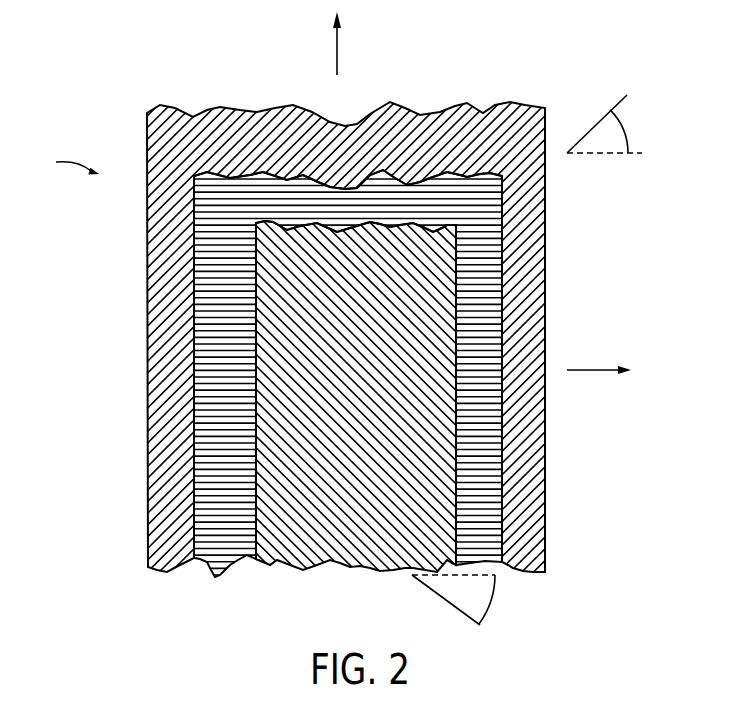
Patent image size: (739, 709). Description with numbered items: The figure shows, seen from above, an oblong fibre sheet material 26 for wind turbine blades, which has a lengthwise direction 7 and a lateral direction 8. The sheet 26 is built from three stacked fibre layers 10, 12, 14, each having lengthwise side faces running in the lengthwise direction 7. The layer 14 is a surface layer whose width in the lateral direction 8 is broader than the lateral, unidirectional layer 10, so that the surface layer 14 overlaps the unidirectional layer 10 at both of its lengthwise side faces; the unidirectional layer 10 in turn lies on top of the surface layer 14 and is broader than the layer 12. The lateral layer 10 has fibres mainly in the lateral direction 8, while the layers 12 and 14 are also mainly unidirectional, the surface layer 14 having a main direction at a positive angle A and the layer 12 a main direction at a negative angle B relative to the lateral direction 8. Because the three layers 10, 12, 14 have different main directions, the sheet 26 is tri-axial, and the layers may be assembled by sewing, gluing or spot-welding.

The lengthwise direction 7 is at (337, 48).
The lateral direction 8 is at (589, 369).
The lateral unidirectional fibre layer 10 is at (503, 273).
The fibre layer 12 is at (274, 561).
The surface layer 14 is at (153, 373).
The fibre sheet material 26 is at (65, 163).
The angle + A is at (612, 124).
The angle − B is at (465, 600).